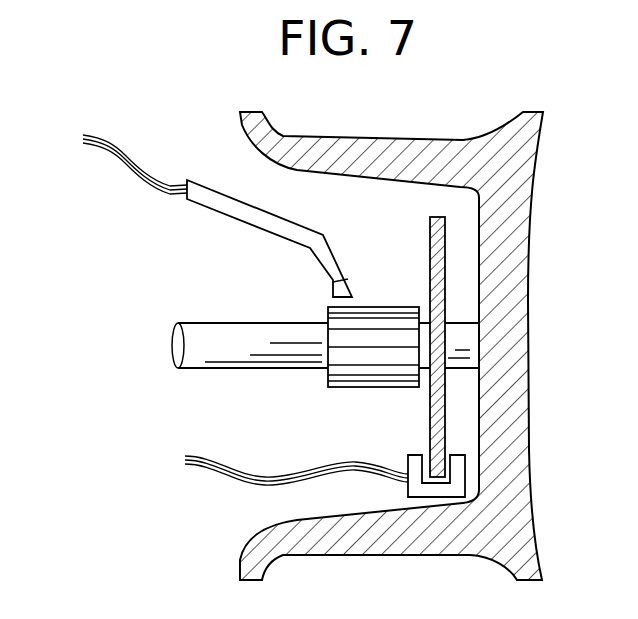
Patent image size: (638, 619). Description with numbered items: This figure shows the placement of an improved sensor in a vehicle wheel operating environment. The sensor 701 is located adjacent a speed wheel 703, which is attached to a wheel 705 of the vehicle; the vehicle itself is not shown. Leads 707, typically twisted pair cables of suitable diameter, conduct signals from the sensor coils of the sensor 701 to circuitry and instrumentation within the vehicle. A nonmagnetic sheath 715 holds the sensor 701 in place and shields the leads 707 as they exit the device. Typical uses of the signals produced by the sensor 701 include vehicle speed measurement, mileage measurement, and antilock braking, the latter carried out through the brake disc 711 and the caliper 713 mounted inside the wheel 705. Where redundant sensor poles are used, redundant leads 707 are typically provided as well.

The sensor 701 is at (333, 291).
The speed wheel 703 is at (387, 324).
The wheel 705 is at (420, 153).
The leads 707 is at (137, 170).
The brake disc 711 is at (430, 402).
The caliper 713 is at (408, 457).
The nonmagnetic sheath 715 is at (253, 213).